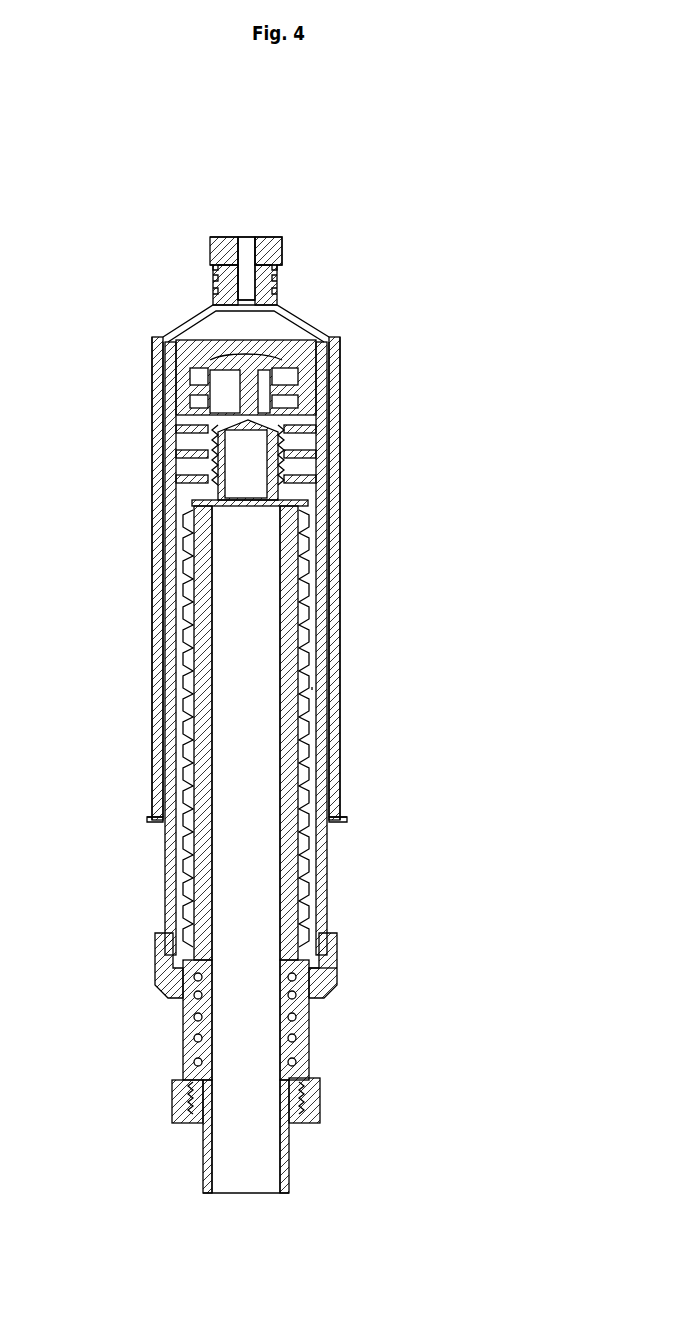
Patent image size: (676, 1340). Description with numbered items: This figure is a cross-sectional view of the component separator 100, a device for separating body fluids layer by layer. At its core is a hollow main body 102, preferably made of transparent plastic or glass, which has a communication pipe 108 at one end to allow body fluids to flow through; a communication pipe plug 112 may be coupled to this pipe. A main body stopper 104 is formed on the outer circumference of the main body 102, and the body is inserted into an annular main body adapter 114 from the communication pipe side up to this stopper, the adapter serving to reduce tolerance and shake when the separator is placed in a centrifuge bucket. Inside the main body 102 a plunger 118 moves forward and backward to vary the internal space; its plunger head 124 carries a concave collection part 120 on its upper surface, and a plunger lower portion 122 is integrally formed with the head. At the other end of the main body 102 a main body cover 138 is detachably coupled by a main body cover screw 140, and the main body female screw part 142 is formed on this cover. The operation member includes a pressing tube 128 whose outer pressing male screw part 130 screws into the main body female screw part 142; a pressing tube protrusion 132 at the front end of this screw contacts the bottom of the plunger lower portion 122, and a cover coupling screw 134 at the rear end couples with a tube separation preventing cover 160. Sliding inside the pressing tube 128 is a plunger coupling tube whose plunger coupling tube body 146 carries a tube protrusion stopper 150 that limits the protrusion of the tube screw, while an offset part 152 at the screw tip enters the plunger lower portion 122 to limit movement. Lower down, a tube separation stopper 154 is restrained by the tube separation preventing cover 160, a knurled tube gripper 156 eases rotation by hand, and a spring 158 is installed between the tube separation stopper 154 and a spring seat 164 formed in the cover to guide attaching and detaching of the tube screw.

The component separator 100 is at (522, 221).
The main body 102 is at (327, 592).
The main body stopper 104 is at (347, 822).
The communication pipe 108 is at (277, 283).
The communication pipe plug 112 is at (283, 247).
The main body adapter 114 is at (341, 535).
The plunger 118 is at (205, 322).
The collection part 120 is at (250, 342).
The plunger lower portion 122 is at (310, 425).
The plunger head 124 is at (300, 355).
The pressing tube 128 is at (308, 687).
The pressing male screw part 130 is at (313, 640).
The pressing tube protrusion 132 is at (300, 490).
The cover coupling screw 134 is at (305, 1077).
The main body cover 138 is at (333, 968).
The main body cover screw 140 is at (333, 935).
The main body female screw part 142 is at (312, 962).
The plunger coupling tube body 146 is at (207, 643).
The tube protrusion stopper 150 is at (197, 518).
The offset part 152 is at (303, 452).
The tube separation stopper 154 is at (197, 965).
The tube gripper 156 is at (207, 1167).
The spring 158 is at (296, 1013).
The tube separation preventing cover 160 is at (322, 1098).
The spring seat 164 is at (300, 1135).